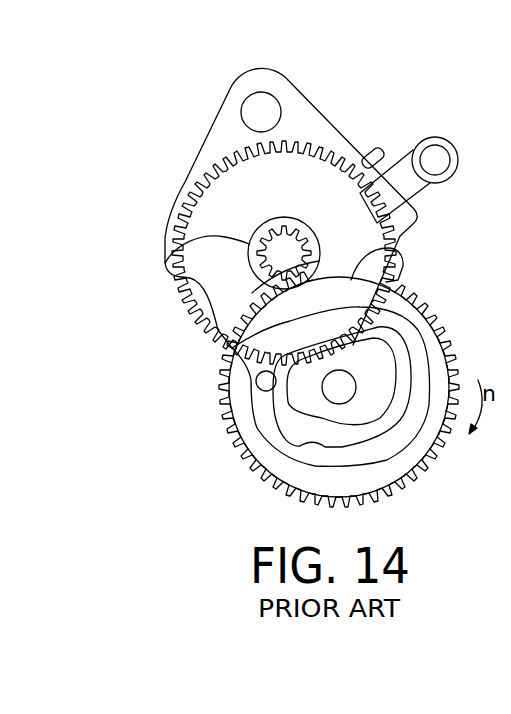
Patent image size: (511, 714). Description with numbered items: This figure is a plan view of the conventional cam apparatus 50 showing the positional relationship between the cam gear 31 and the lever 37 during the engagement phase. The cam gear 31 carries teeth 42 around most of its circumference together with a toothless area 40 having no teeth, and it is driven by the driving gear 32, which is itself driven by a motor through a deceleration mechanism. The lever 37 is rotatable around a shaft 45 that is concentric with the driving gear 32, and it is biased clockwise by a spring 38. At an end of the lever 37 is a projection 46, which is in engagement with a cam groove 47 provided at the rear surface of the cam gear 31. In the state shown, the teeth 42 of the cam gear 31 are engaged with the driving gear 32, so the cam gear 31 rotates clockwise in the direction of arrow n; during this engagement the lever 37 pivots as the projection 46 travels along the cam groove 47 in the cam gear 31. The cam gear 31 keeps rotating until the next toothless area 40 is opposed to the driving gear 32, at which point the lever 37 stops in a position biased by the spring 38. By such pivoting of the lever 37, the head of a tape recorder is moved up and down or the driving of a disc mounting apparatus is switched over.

The cam apparatus 50 is at (380, 74).
The lever 37 is at (322, 124).
The shaft 45 is at (291, 218).
The spring 38 is at (438, 184).
The toothless area 40 is at (398, 244).
The driving gear 32 is at (174, 264).
The teeth 42 is at (216, 323).
The cam gear 31 is at (430, 336).
The projection 46 is at (256, 383).
The cam groove 47 is at (273, 430).